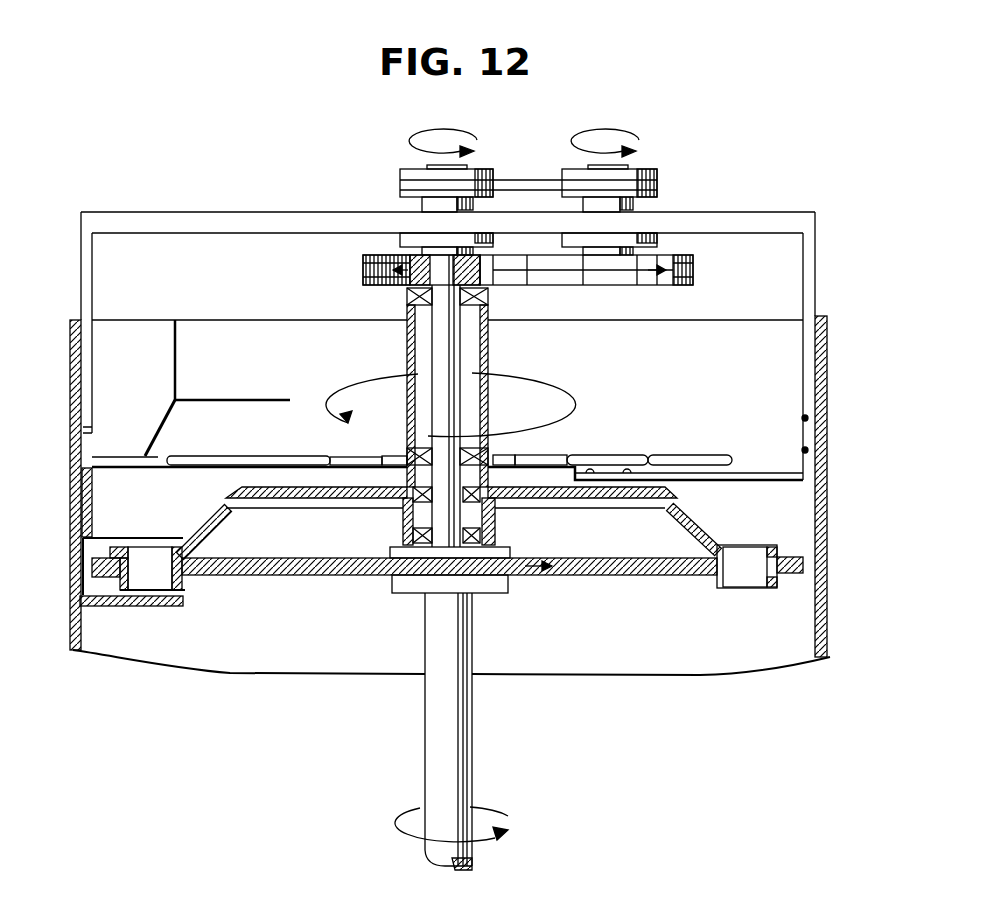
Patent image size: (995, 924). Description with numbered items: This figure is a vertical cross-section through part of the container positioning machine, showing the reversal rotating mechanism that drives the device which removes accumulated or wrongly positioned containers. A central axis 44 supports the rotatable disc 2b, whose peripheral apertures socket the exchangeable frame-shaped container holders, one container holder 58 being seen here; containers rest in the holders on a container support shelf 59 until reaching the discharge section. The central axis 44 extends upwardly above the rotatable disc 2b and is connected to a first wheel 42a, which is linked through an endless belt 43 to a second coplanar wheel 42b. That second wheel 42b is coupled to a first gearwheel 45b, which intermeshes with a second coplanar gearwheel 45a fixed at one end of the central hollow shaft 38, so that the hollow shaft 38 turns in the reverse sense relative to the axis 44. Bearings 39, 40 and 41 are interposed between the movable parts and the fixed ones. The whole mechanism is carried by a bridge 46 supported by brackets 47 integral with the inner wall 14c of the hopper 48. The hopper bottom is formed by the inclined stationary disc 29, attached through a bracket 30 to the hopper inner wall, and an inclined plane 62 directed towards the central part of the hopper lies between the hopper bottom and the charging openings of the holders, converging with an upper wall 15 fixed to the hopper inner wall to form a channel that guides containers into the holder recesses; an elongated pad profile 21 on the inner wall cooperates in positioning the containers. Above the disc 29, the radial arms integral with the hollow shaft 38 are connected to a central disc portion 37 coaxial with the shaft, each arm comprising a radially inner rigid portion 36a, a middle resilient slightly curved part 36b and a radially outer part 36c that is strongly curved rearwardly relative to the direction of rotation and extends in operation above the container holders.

The rotatable disc 2b is at (594, 566).
The inner wall of the hopper 14c is at (126, 440).
The wall 15 is at (170, 437).
The elongated pad profile 21 is at (104, 494).
The inclined stationary disc 29 is at (262, 499).
The bracket 30 is at (765, 470).
The radially inner rigid portion 36a is at (345, 456).
The middle resilient part 36b is at (625, 458).
The radially outer part 36c is at (698, 458).
The central disc portion 37 is at (500, 456).
The central hollow shaft 38 is at (488, 342).
The bearing 39 is at (406, 340).
The bearing 40 is at (404, 522).
The bearing 41 is at (487, 540).
The first wheel 42a is at (400, 184).
The second coplanar wheel 42b is at (657, 184).
The endless belt 43 is at (517, 180).
The central axis 44 is at (458, 730).
The second coplanar gearwheel 45a is at (364, 262).
The first gearwheel 45b is at (693, 268).
The bridge 46 is at (182, 212).
The brackets 47 is at (92, 277).
The hopper 48 is at (820, 387).
The container holder 58 is at (714, 580).
The container support shelf 59 is at (140, 606).
The inclined plane 62 is at (692, 518).